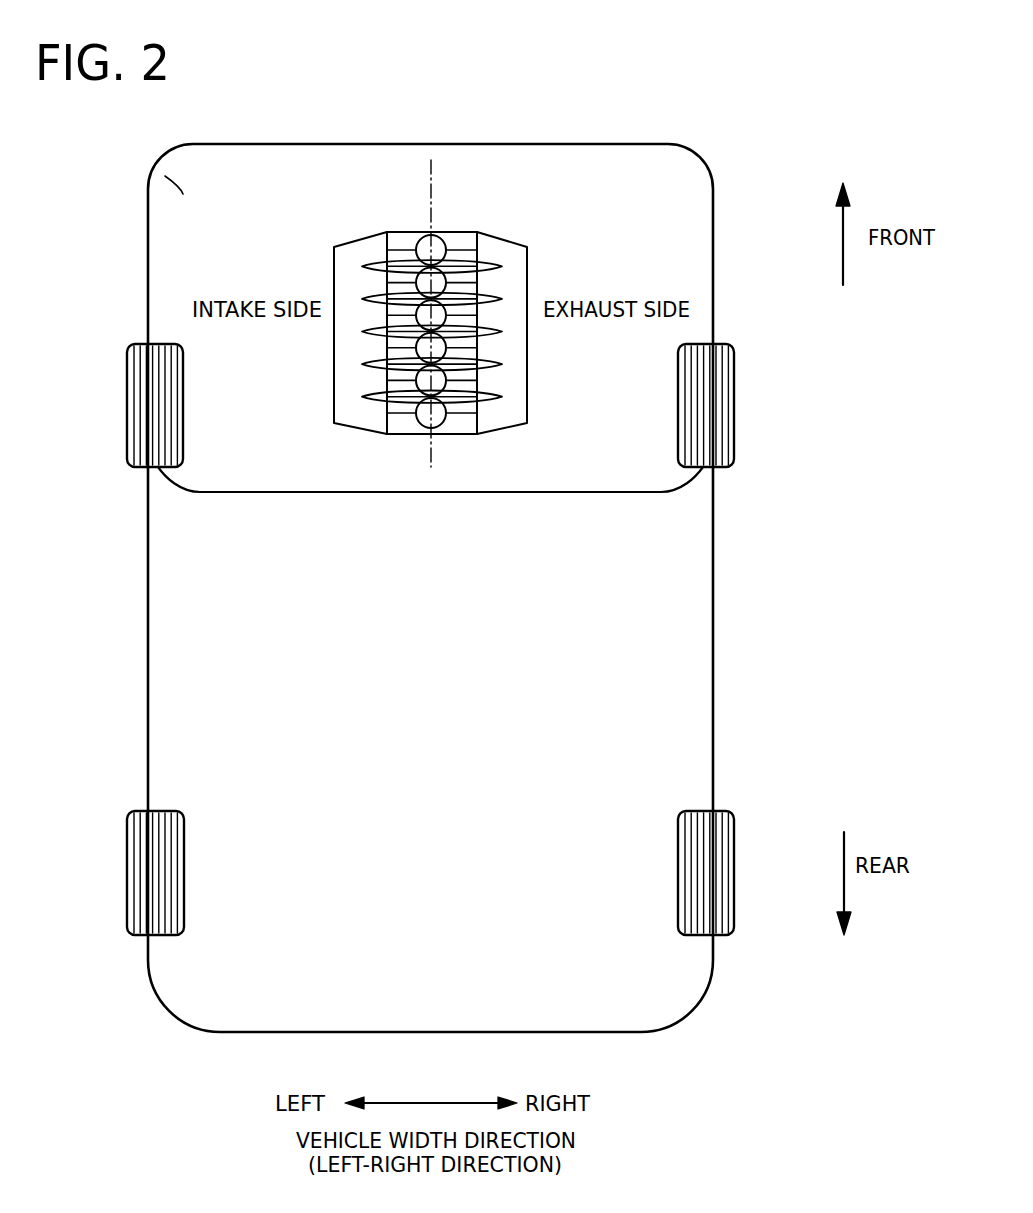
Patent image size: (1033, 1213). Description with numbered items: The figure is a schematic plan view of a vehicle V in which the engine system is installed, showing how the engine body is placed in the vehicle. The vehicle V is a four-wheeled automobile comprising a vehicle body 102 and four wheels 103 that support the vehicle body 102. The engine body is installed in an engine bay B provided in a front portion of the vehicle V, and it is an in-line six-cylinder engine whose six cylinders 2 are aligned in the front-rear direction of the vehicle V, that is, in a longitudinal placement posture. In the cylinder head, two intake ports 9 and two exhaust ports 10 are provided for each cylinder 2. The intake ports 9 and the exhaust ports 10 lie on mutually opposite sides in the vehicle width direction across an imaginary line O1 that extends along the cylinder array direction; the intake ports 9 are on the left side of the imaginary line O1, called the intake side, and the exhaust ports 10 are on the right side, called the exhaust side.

The cylinder 2 is at (428, 246).
The intake port 9 is at (401, 257).
The exhaust port 10 is at (459, 258).
The vehicle body 102 is at (147, 651).
The wheels 103 is at (145, 403).
The engine bay B is at (165, 176).
The imaginary line O1 is at (431, 172).
The vehicle V is at (675, 1054).